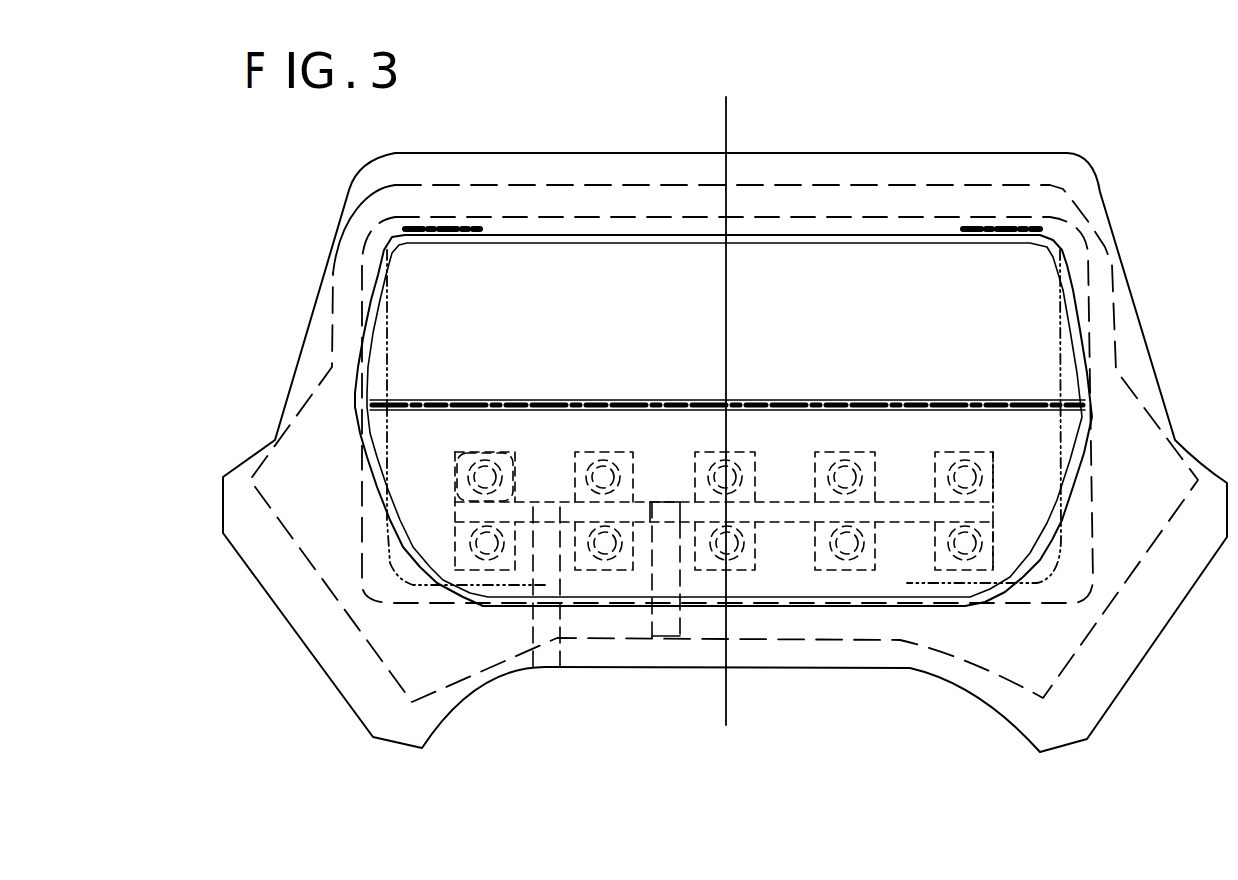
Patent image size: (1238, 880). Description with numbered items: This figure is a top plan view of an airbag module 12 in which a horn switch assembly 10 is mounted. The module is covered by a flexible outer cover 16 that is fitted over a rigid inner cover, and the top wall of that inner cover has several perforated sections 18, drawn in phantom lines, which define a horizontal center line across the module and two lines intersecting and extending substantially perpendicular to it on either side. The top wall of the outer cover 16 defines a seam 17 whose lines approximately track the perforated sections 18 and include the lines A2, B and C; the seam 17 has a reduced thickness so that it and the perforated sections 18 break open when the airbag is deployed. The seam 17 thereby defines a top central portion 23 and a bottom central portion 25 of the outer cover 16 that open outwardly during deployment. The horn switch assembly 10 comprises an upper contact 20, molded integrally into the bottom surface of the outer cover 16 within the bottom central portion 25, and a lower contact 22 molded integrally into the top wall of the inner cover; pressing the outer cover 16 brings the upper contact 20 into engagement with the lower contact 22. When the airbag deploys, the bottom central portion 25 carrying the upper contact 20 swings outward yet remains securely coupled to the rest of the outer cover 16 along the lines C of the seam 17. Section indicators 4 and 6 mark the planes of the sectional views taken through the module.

The section line 4- 4 is at (726, 97).
The section line 6- 6 is at (680, 513).
The horn switch assembly 10 is at (508, 355).
The airbag module 12 is at (282, 349).
The outer cover 16 is at (333, 243).
The seam 17 is at (468, 246).
The perforated sections 18 is at (385, 322).
The upper contact 20 is at (580, 454).
The lower contact 22 is at (458, 481).
The top central portion 23 is at (800, 275).
The bottom central portion 25 is at (747, 430).
The axis A2 is at (796, 382).
The line B is at (367, 303).
The line C is at (578, 248).